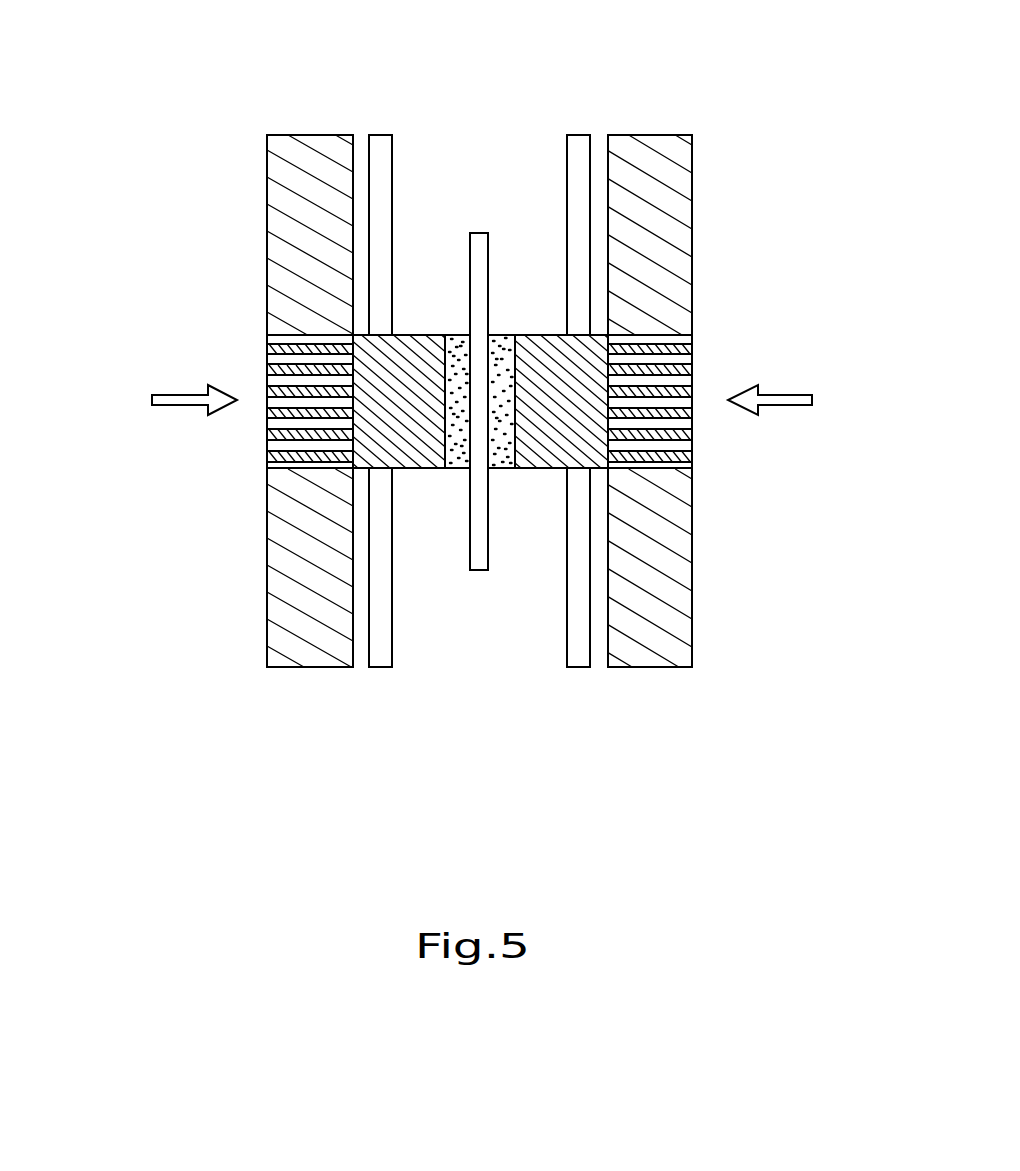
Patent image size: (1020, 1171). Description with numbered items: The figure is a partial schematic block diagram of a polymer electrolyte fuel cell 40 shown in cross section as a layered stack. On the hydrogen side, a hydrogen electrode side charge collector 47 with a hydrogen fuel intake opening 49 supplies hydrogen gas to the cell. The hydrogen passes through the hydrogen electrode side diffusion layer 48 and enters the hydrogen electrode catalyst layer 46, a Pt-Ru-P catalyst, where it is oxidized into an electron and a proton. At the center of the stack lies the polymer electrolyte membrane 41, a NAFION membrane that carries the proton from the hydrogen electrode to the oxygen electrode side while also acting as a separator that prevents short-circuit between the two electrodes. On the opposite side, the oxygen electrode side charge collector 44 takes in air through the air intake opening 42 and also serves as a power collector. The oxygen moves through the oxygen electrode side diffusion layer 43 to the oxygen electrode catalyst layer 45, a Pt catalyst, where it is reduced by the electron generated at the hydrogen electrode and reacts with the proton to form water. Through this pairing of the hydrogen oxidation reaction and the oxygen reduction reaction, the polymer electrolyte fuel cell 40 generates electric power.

The polymer electrolyte fuel cell 40 is at (205, 152).
The polymer electrolyte membrane 41 is at (479, 233).
The air intake opening 42 is at (680, 338).
The oxygen electrode side diffusion layer 43 is at (537, 470).
The oxygen electrode side charge collector 44 is at (653, 668).
The oxygen electrode catalyst layer 45 is at (508, 335).
The hydrogen electrode catalyst layer 46 is at (453, 335).
The hydrogen electrode side charge collector 47 is at (302, 669).
The hydrogen electrode side diffusion layer 48 is at (416, 469).
The hydrogen fuel intake opening 49 is at (268, 467).